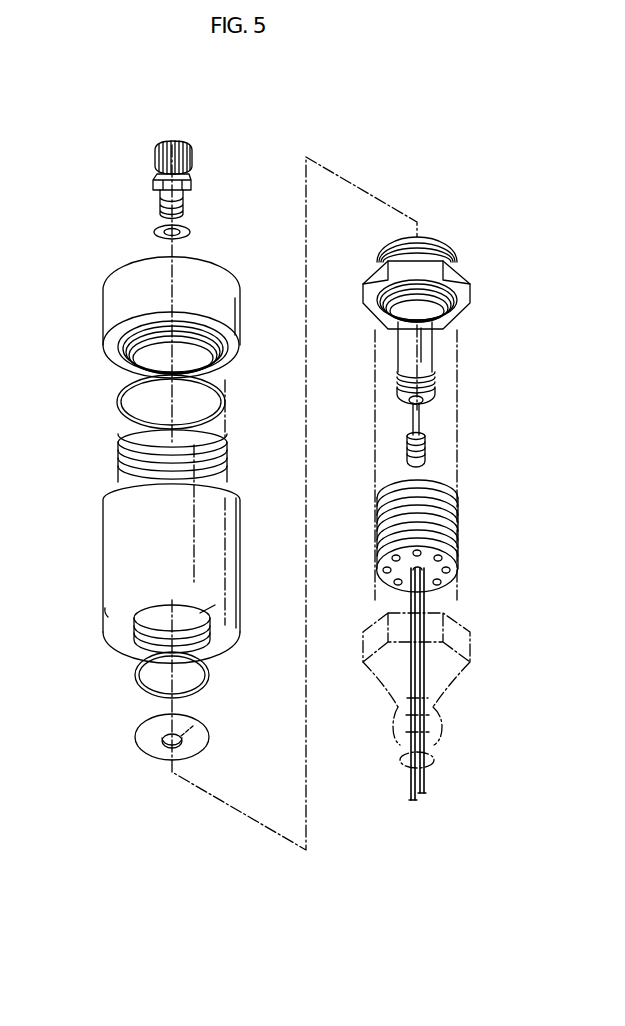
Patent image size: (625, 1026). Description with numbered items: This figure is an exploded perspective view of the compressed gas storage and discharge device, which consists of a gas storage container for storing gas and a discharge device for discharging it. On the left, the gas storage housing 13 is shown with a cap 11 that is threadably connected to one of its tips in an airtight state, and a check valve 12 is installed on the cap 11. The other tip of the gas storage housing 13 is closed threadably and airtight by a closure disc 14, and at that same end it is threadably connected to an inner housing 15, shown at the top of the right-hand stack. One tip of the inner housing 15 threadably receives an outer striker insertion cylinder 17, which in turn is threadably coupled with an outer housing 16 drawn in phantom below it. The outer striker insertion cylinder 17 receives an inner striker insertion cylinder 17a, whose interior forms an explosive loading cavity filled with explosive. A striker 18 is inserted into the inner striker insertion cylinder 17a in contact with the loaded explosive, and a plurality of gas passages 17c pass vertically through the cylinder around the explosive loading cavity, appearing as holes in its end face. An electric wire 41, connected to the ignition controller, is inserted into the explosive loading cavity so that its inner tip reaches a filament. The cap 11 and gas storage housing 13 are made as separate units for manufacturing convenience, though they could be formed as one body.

The cap 11 is at (111, 301).
The check valve 12 is at (154, 156).
The gas storage housing 13 is at (118, 540).
The closure disc 14 is at (148, 745).
The inner housing 15 is at (452, 276).
The outer housing 16 is at (465, 645).
The outer striker insertion cylinder 17 is at (458, 507).
The inner striker insertion cylinder 17a is at (429, 345).
The gas passages 17c is at (445, 575).
The striker 18 is at (422, 425).
The electric wire 41 is at (426, 602).